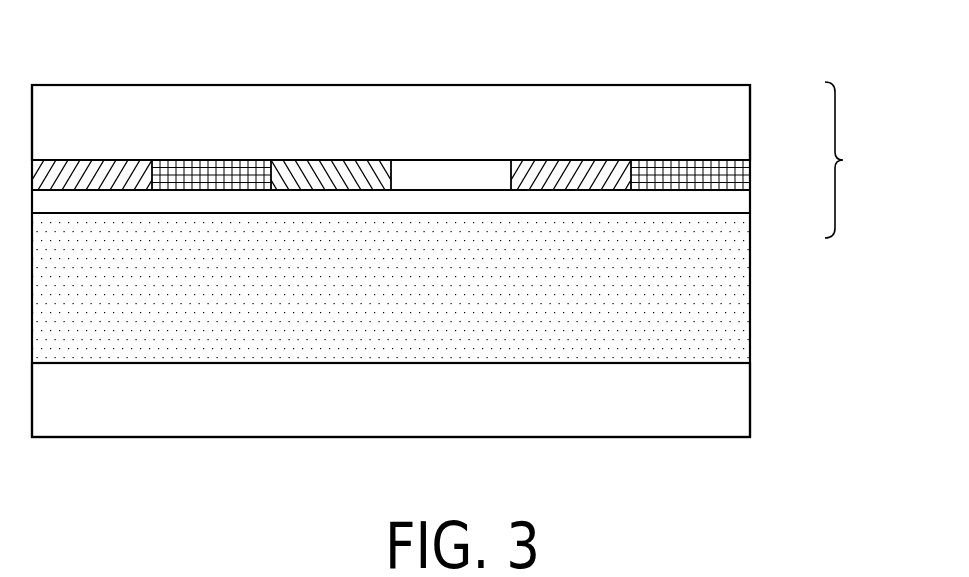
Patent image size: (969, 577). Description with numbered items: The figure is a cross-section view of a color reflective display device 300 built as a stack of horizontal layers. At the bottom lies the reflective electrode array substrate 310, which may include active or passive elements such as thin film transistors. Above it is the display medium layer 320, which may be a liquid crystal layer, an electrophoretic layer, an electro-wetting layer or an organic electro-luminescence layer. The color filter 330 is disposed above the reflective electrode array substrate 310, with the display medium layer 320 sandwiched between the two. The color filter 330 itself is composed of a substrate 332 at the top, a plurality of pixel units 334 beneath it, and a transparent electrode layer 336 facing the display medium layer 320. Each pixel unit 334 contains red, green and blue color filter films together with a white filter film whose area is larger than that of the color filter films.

The color reflective display device 300 is at (863, 519).
The reflective electrode array substrate 310 is at (740, 405).
The display medium layer 320 is at (740, 288).
The color filter 330 is at (860, 160).
The substrate 332 is at (738, 120).
The pixel unit 334 is at (740, 178).
The transparent electrode layer 336 is at (743, 202).